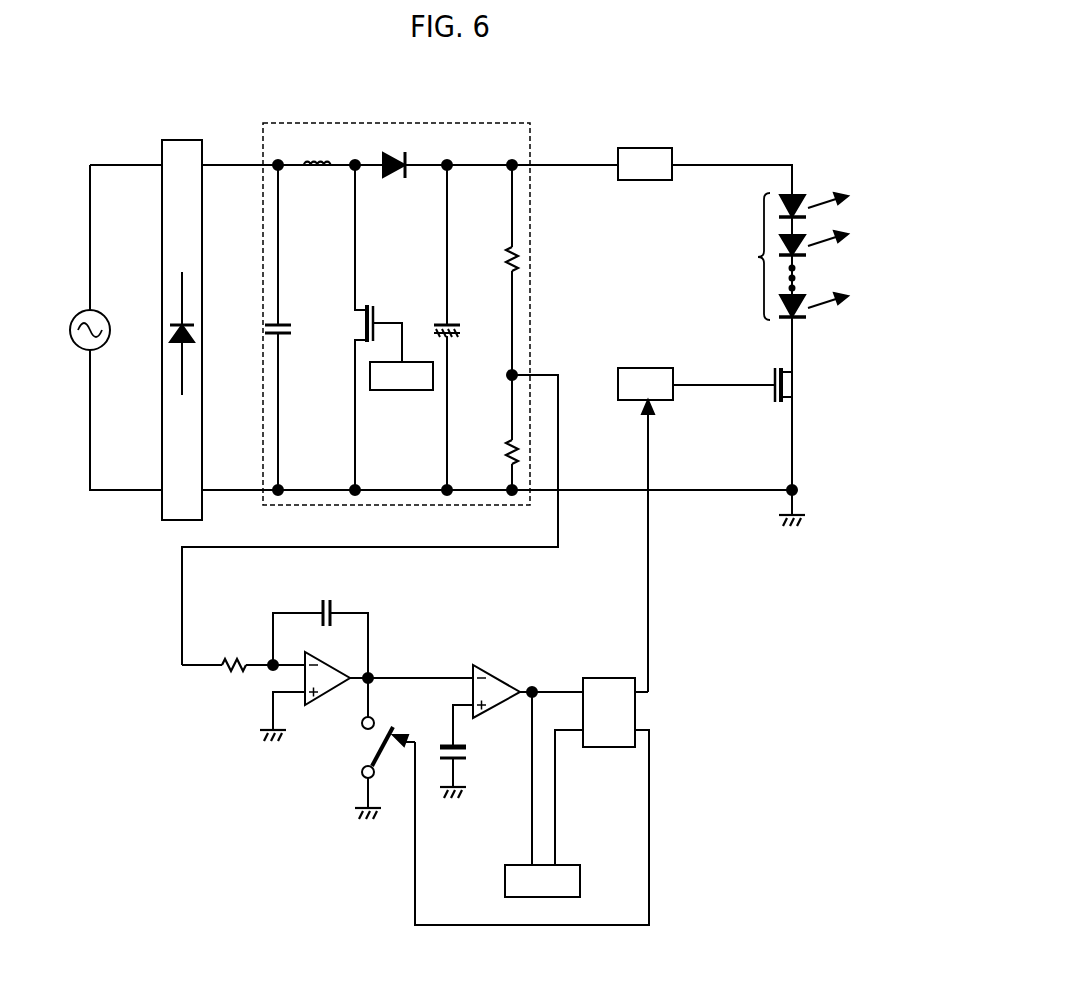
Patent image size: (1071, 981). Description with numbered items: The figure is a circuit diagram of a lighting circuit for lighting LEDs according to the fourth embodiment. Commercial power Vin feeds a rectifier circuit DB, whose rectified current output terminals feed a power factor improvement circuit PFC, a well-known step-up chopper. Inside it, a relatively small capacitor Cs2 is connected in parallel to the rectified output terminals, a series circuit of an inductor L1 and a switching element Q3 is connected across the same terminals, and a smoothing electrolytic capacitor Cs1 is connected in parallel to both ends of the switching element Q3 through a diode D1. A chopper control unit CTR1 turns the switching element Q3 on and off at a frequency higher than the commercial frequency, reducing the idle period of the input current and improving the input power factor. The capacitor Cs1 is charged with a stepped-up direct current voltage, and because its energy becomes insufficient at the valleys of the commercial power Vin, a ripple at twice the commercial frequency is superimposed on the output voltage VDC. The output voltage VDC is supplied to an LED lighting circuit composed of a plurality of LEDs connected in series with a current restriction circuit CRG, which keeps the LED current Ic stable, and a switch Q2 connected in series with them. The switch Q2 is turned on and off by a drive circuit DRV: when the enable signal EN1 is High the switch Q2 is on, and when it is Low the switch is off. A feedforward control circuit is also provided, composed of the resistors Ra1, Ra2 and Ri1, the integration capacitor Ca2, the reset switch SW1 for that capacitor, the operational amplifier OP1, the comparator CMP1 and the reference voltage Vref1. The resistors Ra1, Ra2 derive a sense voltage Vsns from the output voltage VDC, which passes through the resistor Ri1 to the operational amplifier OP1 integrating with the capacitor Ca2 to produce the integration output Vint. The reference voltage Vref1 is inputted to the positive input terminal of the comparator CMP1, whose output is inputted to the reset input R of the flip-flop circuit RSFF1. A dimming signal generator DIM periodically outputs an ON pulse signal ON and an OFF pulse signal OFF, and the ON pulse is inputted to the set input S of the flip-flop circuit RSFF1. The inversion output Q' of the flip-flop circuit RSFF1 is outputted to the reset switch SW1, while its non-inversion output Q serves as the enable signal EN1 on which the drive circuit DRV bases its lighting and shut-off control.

The commercial power Vin is at (70, 330).
The rectifier circuit DB is at (182, 316).
The power factor improvement circuit PFC is at (396, 302).
The inductor L1 is at (317, 148).
The diode D1 is at (396, 152).
The capacitor Cs2 is at (292, 327).
The switching element Q3 is at (365, 327).
The chopper control unit CTR1 is at (401, 376).
The electrolytic capacitor Cs1 is at (460, 327).
The resistor Ra1 is at (494, 270).
The resistor Ra2 is at (494, 432).
The output voltage VDC is at (513, 163).
The sense voltage Vsns is at (383, 509).
The current restriction circuit CRG is at (645, 164).
The LED current Ic is at (758, 148).
The LEDs LED is at (782, 341).
The drive circuit DRV is at (696, 384).
The enable signal EN1 is at (627, 546).
The switch Q2 is at (774, 345).
The resistor Ri1 is at (243, 681).
The integration capacitor Ca2 is at (320, 628).
The operational amplifier OP1 is at (366, 692).
The integration output voltage Vint is at (377, 663).
The reset switch SW1 is at (481, 801).
The comparator CMP1 is at (518, 694).
The reference voltage Vref1 is at (481, 772).
The flip-flop circuit RSFF1 is at (590, 760).
The dimming signal generator DIM is at (542, 881).
The OFF pulse signal OFF is at (501, 849).
The ON pulse signal ON is at (582, 849).